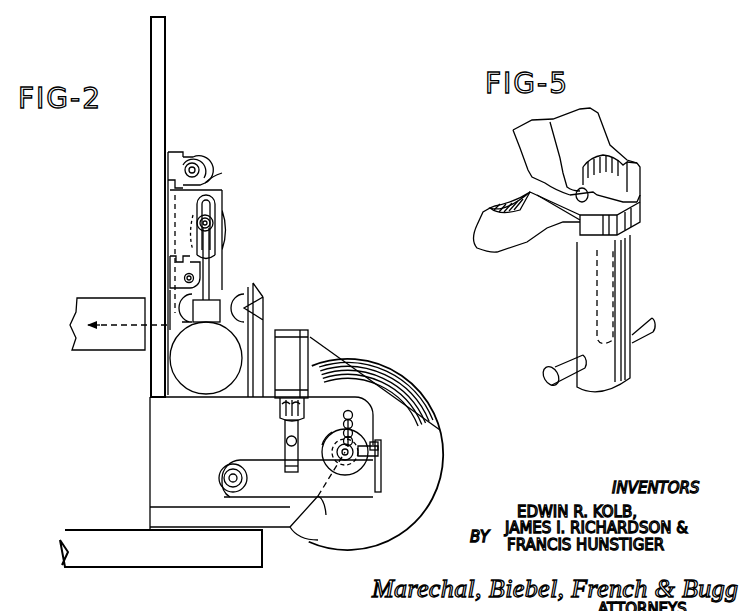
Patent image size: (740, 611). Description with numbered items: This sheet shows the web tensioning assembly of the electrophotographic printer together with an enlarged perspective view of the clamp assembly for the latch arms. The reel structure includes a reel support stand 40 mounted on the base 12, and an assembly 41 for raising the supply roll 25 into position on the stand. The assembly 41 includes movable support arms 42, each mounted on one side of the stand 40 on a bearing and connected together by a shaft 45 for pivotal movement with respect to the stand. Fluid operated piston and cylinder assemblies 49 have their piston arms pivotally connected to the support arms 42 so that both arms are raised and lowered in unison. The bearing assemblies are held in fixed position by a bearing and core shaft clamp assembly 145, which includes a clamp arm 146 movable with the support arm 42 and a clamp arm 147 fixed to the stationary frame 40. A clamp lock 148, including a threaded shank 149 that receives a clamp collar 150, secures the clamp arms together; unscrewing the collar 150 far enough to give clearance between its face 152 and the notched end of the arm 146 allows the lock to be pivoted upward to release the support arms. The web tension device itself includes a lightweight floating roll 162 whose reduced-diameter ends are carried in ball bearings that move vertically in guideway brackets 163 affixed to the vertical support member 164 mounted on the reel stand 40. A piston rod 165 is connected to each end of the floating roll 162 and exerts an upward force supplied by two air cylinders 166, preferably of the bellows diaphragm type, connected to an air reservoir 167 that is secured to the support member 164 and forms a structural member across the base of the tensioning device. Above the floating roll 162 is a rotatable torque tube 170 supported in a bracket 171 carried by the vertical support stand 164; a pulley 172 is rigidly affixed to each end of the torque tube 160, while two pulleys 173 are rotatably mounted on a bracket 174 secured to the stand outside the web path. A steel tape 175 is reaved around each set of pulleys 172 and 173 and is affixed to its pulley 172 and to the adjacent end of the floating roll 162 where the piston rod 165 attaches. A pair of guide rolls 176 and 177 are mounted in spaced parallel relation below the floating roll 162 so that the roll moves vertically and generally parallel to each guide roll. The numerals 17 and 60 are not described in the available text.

In FIG. 2, the base 12 is at (210, 560).
In FIG. 2, the work piece 17 is at (78, 308).
In FIG. 2, the supply roll 25 is at (370, 372).
In FIG. 2, the reel support stand 40 is at (168, 462).
In FIG. 2, the assembly for raising the supply roll 41 is at (278, 445).
In FIG. 2, the support arm 42 is at (316, 500).
In FIG. 2, the shaft 45 is at (222, 478).
In FIG. 2, the fluid operated piston and cylinder assembly 49 is at (290, 348).
In FIG. 2, the cam wheel 60 is at (345, 460).
In FIG. 5, the bearing and core shaft clamp assembly 145 is at (510, 172).
In FIG. 2, the clamp arm 146 is at (380, 452).
In FIG. 5, the clamp arm 146 is at (563, 226).
In FIG. 2, the clamp arm 147 is at (377, 443).
In FIG. 5, the clamp arm 147 is at (588, 122).
In FIG. 2, the clamp lock 148 is at (381, 490).
In FIG. 5, the clamp lock 148 is at (633, 283).
In FIG. 5, the threaded shank 149 is at (606, 218).
In FIG. 5, the clamp collar 150 is at (633, 355).
In FIG. 5, the face of the collar 152 is at (626, 232).
In FIG. 2, the torque tube 160 is at (230, 228).
In FIG. 2, the floating roll 162 is at (214, 206).
In FIG. 2, the guideway bracket 163 is at (218, 243).
In FIG. 2, the vertical support member 164 is at (166, 42).
In FIG. 2, the piston rod 165 is at (212, 268).
In FIG. 2, the air cylinder 166 is at (203, 322).
In FIG. 2, the air reservoir 167 is at (180, 365).
In FIG. 2, the torque tube 170 is at (193, 160).
In FIG. 2, the bracket 171 is at (168, 163).
In FIG. 2, the pulley 172 is at (205, 163).
In FIG. 2, the pulley 173 is at (196, 262).
In FIG. 2, the bracket 174 is at (182, 274).
In FIG. 2, the steel tape 175 is at (218, 178).
In FIG. 2, the guide roll 176 is at (176, 305).
In FIG. 2, the guide roll 177 is at (262, 300).